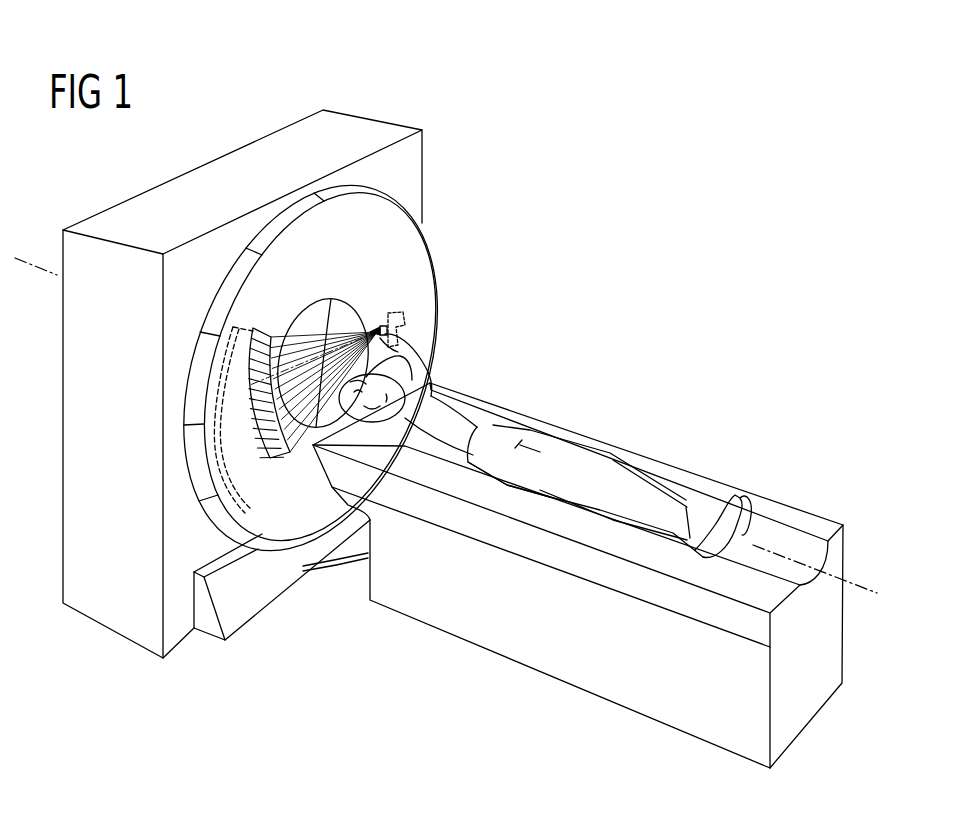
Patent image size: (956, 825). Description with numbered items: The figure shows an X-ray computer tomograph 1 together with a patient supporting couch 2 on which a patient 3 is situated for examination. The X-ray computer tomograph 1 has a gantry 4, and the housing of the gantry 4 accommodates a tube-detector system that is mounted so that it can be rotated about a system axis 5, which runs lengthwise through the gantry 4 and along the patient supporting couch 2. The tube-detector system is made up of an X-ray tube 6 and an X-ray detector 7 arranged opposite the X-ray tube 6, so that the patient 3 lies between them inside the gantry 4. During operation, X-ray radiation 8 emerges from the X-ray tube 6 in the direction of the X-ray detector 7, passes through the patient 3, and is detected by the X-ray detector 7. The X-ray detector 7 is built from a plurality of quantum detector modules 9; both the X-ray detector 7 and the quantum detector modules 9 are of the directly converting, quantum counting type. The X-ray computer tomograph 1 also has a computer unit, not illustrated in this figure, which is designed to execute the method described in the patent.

The X-ray computer tomograph 1 is at (609, 287).
The patient supporting couch 2 is at (690, 483).
The patient 3 is at (477, 425).
The gantry 4 is at (261, 111).
The system axis 5 is at (860, 583).
The X-ray tube 6 is at (410, 332).
The X-ray detector 7 is at (262, 488).
The X-ray radiation 8 is at (347, 330).
The quantum detector modules 9 is at (285, 452).